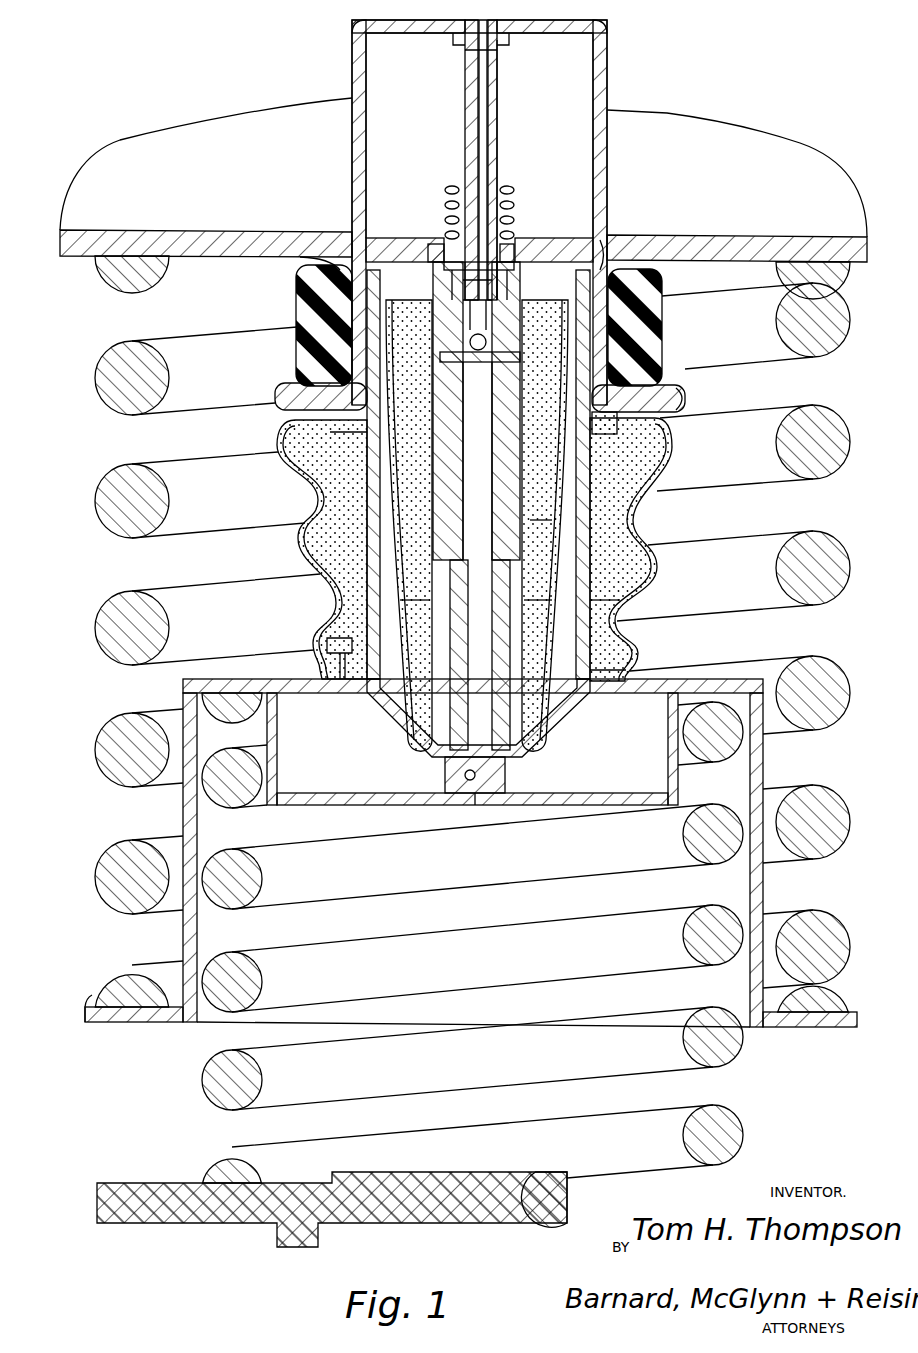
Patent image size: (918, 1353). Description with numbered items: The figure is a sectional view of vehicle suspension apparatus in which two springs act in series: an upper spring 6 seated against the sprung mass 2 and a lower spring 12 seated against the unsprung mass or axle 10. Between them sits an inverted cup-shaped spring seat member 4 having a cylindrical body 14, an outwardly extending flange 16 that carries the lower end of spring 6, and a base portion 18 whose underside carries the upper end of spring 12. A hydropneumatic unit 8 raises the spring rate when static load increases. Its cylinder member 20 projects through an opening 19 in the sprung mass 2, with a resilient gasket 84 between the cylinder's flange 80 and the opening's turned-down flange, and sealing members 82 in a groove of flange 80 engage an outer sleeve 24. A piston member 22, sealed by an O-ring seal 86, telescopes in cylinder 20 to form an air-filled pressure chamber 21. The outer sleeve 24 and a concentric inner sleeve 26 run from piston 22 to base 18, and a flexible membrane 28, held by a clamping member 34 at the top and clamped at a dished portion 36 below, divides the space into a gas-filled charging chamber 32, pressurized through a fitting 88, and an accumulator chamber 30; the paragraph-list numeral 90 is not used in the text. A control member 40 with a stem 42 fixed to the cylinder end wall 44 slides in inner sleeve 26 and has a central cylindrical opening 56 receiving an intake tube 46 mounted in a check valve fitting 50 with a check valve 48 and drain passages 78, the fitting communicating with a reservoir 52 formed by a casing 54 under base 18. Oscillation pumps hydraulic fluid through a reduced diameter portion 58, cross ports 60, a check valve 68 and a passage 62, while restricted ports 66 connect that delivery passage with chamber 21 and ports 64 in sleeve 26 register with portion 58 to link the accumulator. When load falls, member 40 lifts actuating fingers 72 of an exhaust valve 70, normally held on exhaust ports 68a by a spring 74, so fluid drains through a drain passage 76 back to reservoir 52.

The sprung mass 2 is at (160, 240).
The spring seat member 4 is at (95, 1026).
The spring 6 is at (125, 590).
The hydropneumatic unit 8 is at (709, 400).
The unsprung mass 10 is at (135, 1185).
The spring 12 is at (202, 1085).
The cylindrical body 14 is at (185, 800).
The flange 16 is at (85, 1007).
The base portion 18 is at (248, 679).
The opening 19 is at (345, 235).
The cylinder member 20 is at (352, 62).
The pressure chamber 21 is at (385, 100).
The piston member 22 is at (582, 240).
The outer sleeve 24 is at (590, 582).
The inner sleeve 26 is at (430, 440).
The flexible membrane 28 is at (400, 530).
The accumulator chamber 30 is at (548, 520).
The charging chamber 32 is at (580, 665).
The clamping member 34 is at (610, 345).
The dished portion 36 is at (545, 720).
The control member 40 is at (536, 574).
The stem 42 is at (497, 130).
The end wall 44 is at (530, 35).
The intake tube 46 is at (462, 592).
The check valve 48 is at (465, 773).
The check valve fitting 50 is at (505, 785).
The reservoir 52 is at (640, 793).
The casing 54 is at (560, 805).
The central cylindrical opening 56 is at (492, 455).
The reduced diameter portion 58 is at (524, 392).
The cross ports 60 is at (520, 340).
The passage 62 is at (475, 115).
The ports 64 is at (435, 485).
The restricted ports 66 is at (497, 55).
The check valve 68 is at (452, 362).
The exhaust ports 68a is at (505, 250).
The exhaust valve 70 is at (432, 240).
The actuating fingers 72 is at (445, 262).
The spring 74 is at (450, 192).
The drain passage 76 is at (428, 418).
The drain passages 78 is at (460, 793).
The flange 80 is at (668, 414).
The sealing members 82 is at (608, 405).
The resilient gasket 84 is at (297, 352).
The O-ring seal 86 is at (615, 256).
The fitting 88 is at (345, 653).
The right bellows 90 is at (660, 540).